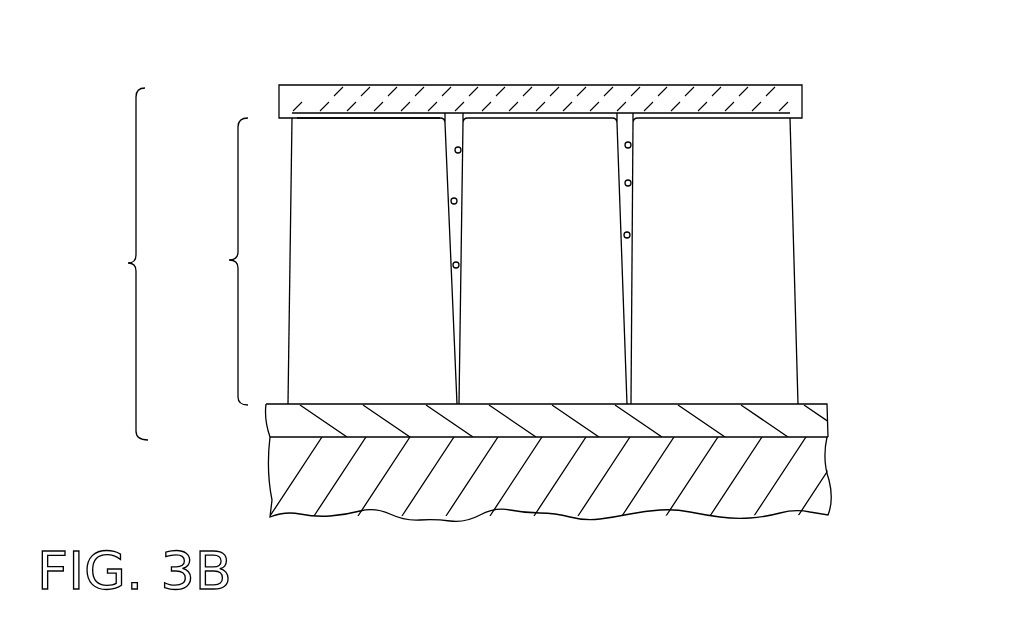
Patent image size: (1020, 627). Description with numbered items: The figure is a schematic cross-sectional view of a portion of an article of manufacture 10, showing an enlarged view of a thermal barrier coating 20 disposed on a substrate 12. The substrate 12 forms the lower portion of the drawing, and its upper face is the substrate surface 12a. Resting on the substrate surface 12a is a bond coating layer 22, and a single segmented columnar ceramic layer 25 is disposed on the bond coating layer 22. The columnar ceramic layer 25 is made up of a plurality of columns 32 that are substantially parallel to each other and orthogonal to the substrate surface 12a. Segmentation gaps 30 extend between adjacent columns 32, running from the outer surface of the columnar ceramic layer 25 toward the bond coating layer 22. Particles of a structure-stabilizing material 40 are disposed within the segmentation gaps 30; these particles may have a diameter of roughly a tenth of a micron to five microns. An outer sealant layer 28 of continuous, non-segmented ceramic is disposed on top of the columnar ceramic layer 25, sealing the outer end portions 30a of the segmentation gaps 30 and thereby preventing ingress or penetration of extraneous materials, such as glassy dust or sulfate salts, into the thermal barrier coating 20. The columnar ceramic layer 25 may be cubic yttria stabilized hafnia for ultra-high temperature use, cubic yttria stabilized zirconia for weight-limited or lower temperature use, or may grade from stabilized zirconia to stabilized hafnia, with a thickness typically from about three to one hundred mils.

The article of manufacture 10 is at (737, 42).
The substrate 12 is at (340, 520).
The substrate surface 12a is at (803, 438).
The thermal barrier coating 20 is at (125, 263).
The bond coating layer 22 is at (817, 424).
The segmented columnar ceramic layer 25 is at (228, 260).
The sealant layer 28 is at (535, 92).
The segmentation gaps 30 is at (632, 165).
The outer end portions of segmentation gaps 30a is at (458, 133).
The columns 32 is at (628, 310).
The structure-stabilizing material 40 is at (460, 258).